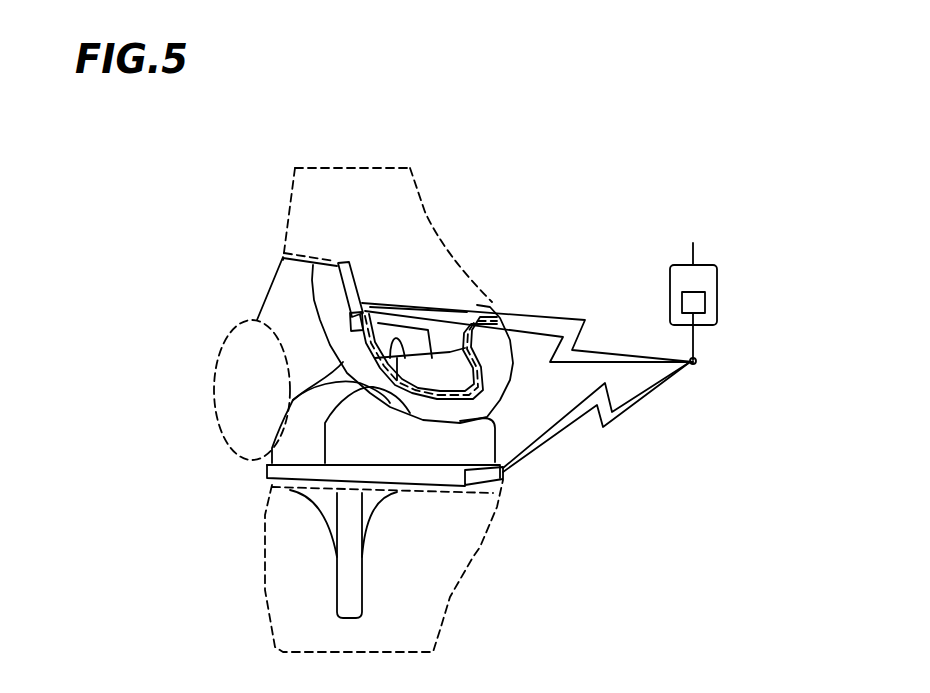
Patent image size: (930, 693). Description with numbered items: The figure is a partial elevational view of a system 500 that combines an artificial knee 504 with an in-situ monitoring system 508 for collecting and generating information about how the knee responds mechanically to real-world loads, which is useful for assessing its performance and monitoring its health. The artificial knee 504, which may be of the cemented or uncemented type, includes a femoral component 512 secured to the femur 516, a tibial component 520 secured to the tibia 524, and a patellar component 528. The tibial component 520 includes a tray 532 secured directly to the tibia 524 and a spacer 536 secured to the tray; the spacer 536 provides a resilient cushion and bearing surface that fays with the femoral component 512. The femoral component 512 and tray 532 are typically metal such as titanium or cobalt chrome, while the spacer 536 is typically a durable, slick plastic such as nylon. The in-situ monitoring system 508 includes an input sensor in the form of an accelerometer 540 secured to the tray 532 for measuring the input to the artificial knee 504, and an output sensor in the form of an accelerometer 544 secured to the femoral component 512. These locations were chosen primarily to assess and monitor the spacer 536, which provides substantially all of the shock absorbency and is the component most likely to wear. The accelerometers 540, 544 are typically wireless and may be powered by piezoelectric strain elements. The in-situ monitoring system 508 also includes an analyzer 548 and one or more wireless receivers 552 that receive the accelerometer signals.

The system 500 is at (565, 562).
The artificial knee 504 is at (170, 298).
The in-situ monitoring system 508 is at (620, 286).
The femoral component 512 is at (278, 268).
The femur 516 is at (292, 182).
The tibial component 520 is at (250, 470).
The tibia 524 is at (265, 597).
The patellar component 528 is at (230, 410).
The tray 532 is at (267, 481).
The spacer 536 is at (495, 440).
The accelerometer 540 is at (505, 474).
The accelerometer 544 is at (350, 276).
The analyzer 548 is at (693, 258).
The wireless receiver 552 is at (705, 303).